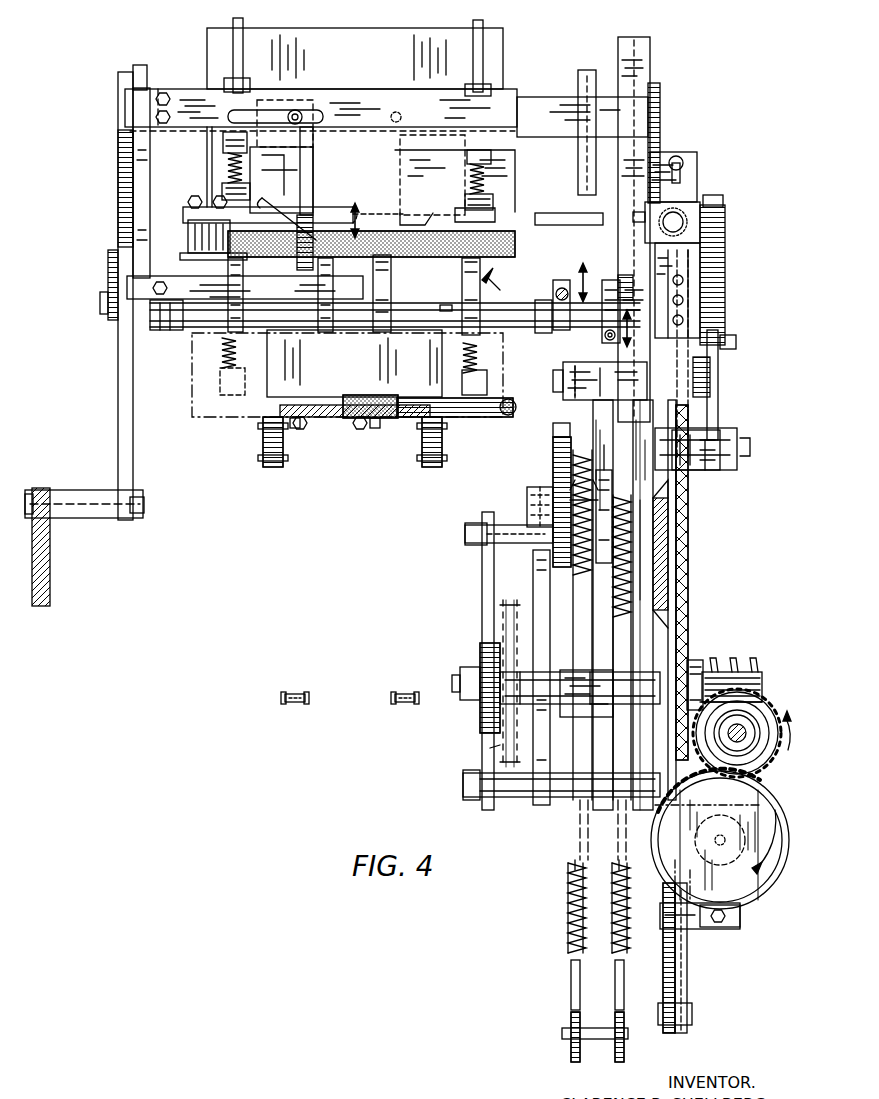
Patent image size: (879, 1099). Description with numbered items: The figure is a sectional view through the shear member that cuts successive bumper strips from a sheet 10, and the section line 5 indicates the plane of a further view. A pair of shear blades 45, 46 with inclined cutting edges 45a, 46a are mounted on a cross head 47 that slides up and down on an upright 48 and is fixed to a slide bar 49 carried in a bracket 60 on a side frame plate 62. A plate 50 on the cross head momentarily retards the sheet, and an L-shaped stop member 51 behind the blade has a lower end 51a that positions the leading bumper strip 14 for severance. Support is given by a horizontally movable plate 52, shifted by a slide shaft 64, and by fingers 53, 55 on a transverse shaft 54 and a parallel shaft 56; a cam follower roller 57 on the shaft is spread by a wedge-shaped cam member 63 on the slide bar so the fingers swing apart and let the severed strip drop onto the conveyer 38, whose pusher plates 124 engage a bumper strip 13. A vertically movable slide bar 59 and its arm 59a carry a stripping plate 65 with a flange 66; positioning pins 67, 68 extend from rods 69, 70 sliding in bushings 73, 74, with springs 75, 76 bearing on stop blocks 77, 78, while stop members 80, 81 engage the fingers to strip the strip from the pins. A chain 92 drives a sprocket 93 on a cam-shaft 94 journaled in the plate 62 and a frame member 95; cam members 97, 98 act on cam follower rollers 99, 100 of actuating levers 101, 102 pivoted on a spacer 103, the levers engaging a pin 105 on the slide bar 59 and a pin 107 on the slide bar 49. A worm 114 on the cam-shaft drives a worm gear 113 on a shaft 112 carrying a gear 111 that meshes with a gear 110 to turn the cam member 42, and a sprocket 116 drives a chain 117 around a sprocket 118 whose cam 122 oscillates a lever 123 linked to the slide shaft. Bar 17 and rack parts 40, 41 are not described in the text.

The section line 5- 5 is at (355, 7).
The sheet 10 is at (506, 286).
The bumper strip 13 is at (384, 420).
The leading bumper strip 14 is at (515, 252).
The lower roller bar 17 is at (482, 420).
The conveyer 38 is at (352, 420).
The rack bar 40 is at (687, 970).
The rack teeth 41 is at (663, 968).
The cam member 42 is at (773, 800).
The shear blade 45 is at (313, 190).
The inclined cutting edge 45a is at (300, 189).
The shear blade 46 is at (410, 175).
The inclined cutting edge 46a is at (445, 202).
The cross head 47 is at (558, 103).
The upright 48 is at (139, 66).
The slide bar 49 is at (638, 63).
The plate 50 is at (410, 198).
The L-shaped stop member 51 is at (313, 166).
The downwardly extending lower end 51a is at (305, 262).
The horizontally movable plate 52 is at (391, 276).
The fingers 53 is at (328, 294).
The transverse shaft 54 is at (405, 305).
The fingers 55 is at (480, 272).
The parallel shaft 56 is at (445, 305).
The cam follower roller 57 is at (612, 278).
The vertically movable slide bar 59 is at (589, 70).
The transversely extending arm 59a is at (393, 118).
The bracket 60 is at (567, 372).
The side frame plate 62 is at (652, 624).
The wedge-shaped cam member 63 is at (634, 190).
The slide shaft 64 is at (682, 215).
The stripping plate 65 is at (498, 55).
The stripping and pressing flange 66 is at (355, 205).
The positioning pin 67 is at (230, 258).
The positioning pin 68 is at (475, 227).
The rod 69 is at (233, 23).
The rod 70 is at (483, 17).
The bushing 73 is at (223, 150).
The bushing 74 is at (491, 158).
The spring 75 is at (228, 172).
The spring 76 is at (490, 183).
The stop block 77 is at (222, 195).
The stop block 78 is at (493, 201).
The stop member 80 is at (224, 84).
The stop member 81 is at (491, 88).
The chain 92 is at (495, 749).
The sprocket 93 is at (503, 627).
The cam-shaft 94 is at (462, 681).
The frame member 95 is at (482, 580).
The cam member 97 is at (536, 584).
The cam member 98 is at (612, 762).
The cam follower roller 99 is at (530, 490).
The cam follower roller 100 is at (660, 527).
The actuating lever 101 is at (562, 424).
The actuating lever 102 is at (603, 470).
The spacer 103 is at (500, 537).
The pin 105 is at (553, 448).
The pin 107 is at (660, 499).
The gear 110 is at (752, 885).
The gear 111 is at (722, 690).
The shaft 112 is at (740, 728).
The worm gear 113 is at (757, 712).
The worm 114 is at (742, 665).
The sprocket 116 is at (695, 660).
The chain 117 is at (688, 557).
The sprocket 118 is at (696, 382).
The cam 122 is at (702, 293).
The lever 123 is at (703, 301).
The pusher plates 124 is at (358, 387).